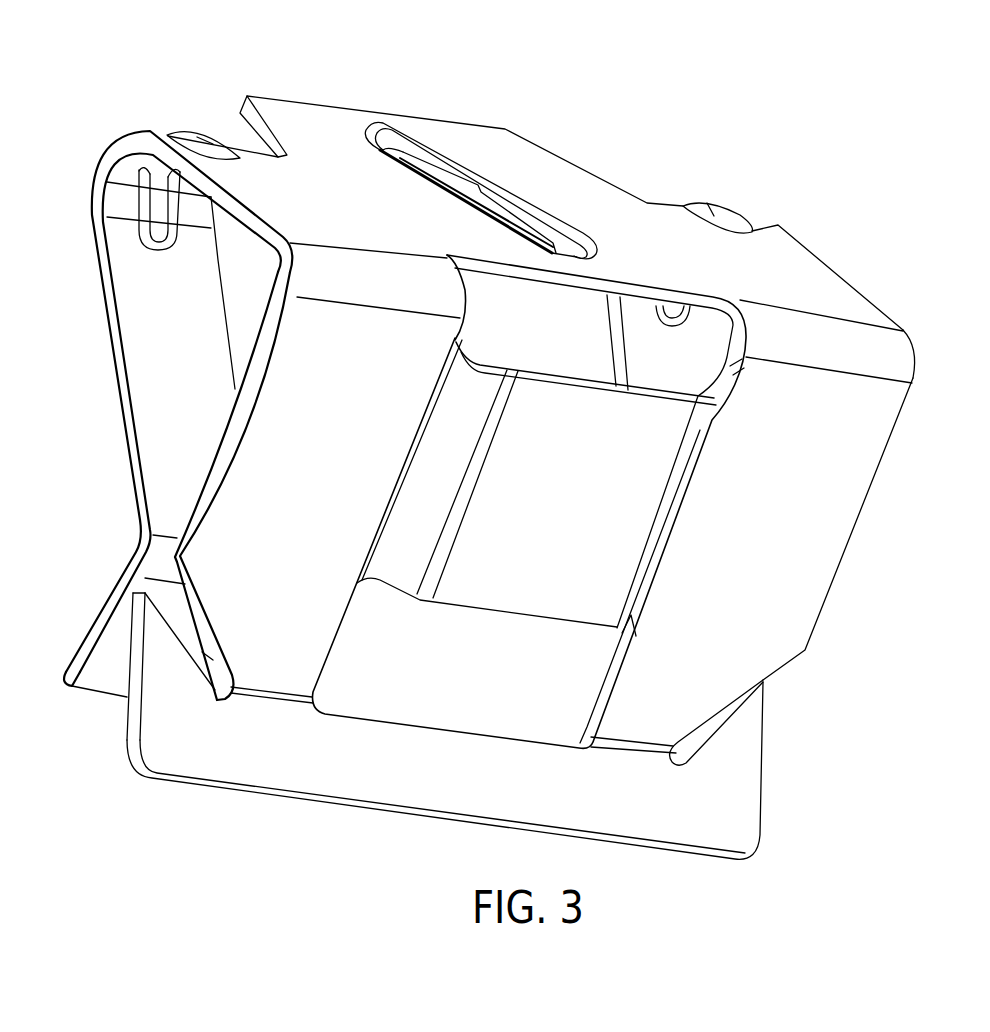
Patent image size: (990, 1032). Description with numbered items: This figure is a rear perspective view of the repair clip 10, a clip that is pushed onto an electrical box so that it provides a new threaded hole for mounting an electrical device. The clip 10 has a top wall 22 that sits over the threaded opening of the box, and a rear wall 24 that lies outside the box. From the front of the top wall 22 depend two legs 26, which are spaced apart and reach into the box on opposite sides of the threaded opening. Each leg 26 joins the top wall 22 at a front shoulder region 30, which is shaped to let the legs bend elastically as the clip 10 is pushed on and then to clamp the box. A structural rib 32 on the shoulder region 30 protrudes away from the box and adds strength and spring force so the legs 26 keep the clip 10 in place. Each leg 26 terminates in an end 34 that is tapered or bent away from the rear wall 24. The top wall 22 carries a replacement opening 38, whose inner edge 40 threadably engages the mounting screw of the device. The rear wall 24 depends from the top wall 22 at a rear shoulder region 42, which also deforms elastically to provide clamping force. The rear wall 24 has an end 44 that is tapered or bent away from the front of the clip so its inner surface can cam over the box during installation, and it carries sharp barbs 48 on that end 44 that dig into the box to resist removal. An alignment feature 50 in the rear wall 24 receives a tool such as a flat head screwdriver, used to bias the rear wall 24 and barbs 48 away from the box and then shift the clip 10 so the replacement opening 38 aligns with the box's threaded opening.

The repair clip 10 is at (789, 108).
The top wall 22 is at (792, 257).
The rear wall 24 is at (827, 563).
The legs 26 is at (110, 355).
The front shoulder region 30 is at (108, 168).
The structural rib 32 is at (192, 135).
The end 34 is at (67, 675).
The replacement opening 38 is at (527, 197).
The inner edge 40 is at (440, 167).
The rear shoulder region 42 is at (905, 352).
The end 44 is at (185, 782).
The barbs 48 is at (137, 608).
The alignment feature 50 is at (623, 393).